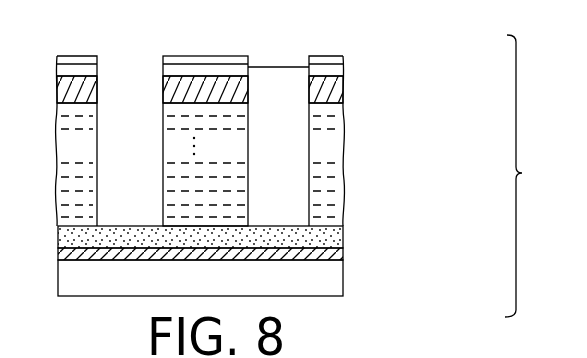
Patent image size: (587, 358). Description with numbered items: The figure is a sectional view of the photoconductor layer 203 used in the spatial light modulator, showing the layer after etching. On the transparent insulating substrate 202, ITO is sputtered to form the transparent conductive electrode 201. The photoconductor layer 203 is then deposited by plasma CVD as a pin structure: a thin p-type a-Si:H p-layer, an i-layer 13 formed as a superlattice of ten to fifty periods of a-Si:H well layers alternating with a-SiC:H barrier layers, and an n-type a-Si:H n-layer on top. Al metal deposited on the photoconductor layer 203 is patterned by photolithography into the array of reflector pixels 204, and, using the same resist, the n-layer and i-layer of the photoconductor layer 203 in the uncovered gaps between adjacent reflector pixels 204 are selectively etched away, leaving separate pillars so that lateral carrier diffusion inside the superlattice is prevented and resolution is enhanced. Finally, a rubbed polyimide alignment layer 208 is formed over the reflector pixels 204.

The photovoltaic element (partial, 213) 13 is at (48, 141).
The transparent conductive electrode 201 is at (62, 251).
The transparent insulating substrate 202 is at (62, 281).
The photoconductor layer 203 is at (522, 173).
The reflector pixel 204 is at (97, 72).
The rubbed alignment layer 208 is at (78, 56).